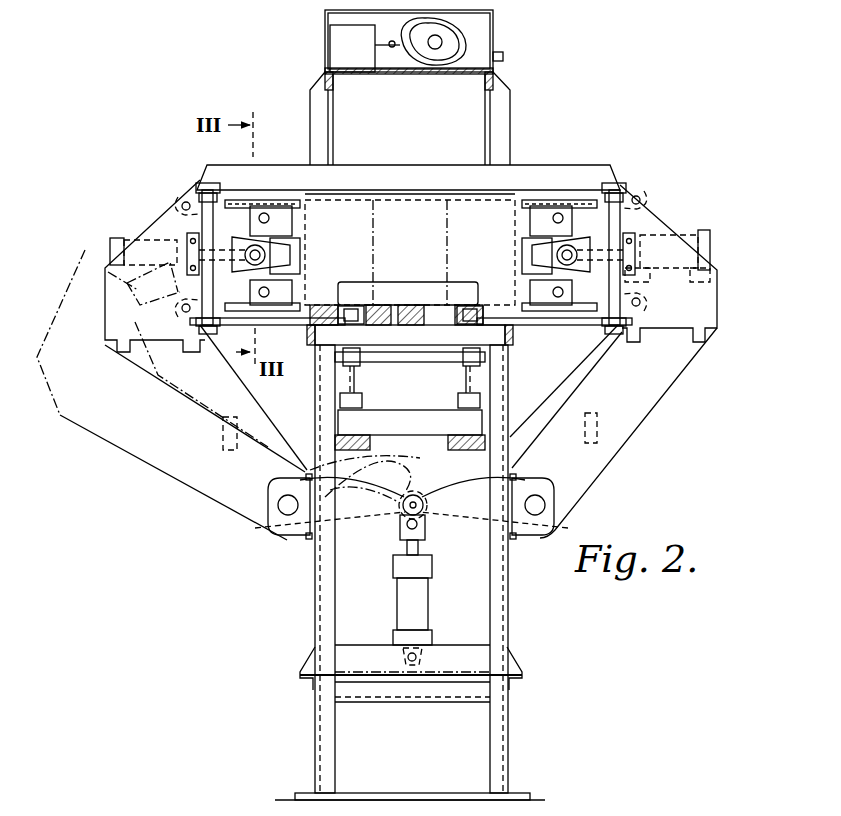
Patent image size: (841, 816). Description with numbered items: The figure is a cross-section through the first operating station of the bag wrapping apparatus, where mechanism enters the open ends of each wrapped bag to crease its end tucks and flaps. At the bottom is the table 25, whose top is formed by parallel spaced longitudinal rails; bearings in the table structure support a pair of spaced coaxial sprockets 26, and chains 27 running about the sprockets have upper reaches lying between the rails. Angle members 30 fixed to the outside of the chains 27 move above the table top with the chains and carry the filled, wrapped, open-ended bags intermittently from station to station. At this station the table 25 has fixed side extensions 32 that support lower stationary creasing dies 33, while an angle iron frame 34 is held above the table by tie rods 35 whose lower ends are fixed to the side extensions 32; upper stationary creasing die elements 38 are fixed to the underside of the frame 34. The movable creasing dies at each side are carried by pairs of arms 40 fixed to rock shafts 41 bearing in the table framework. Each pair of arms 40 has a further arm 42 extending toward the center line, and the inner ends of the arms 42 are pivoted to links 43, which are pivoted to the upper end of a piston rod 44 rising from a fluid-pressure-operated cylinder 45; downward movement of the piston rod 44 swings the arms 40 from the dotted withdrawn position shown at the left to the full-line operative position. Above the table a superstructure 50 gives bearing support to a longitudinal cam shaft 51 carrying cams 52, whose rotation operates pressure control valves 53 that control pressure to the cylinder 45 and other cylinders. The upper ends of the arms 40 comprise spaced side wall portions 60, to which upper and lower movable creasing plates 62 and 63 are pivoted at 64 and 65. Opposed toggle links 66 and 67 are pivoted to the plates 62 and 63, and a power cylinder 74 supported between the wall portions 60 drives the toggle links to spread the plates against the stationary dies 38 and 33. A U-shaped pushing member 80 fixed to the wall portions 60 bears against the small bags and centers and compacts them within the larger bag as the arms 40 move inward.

The table 25 is at (512, 624).
The sprockets 26 is at (358, 360).
The chains 27 is at (340, 400).
The angle members 30 is at (407, 292).
The side extensions 32 is at (290, 322).
The lower stationary creasing dies 33 is at (250, 312).
The angle iron frame 34 is at (418, 170).
The tie rods 35 is at (207, 188).
The upper stationary creasing die elements 38 is at (295, 200).
The arms 40 is at (185, 430).
The rock shafts 41 is at (285, 507).
The arm 42 is at (352, 528).
The links 43 is at (427, 509).
The piston rod 44 is at (405, 548).
The fluid-pressure-operated cylinder 45 is at (428, 597).
The superstructure 50 is at (500, 40).
The cam shaft 51 is at (441, 40).
The cams 52 is at (428, 73).
The pressure control valves 53 is at (363, 76).
The side wall portions 60 is at (250, 245).
The upper movable creasing plate 62 is at (255, 200).
The lower movable creasing plate 63 is at (300, 302).
The pivot 64 is at (184, 203).
The pivot 65 is at (186, 313).
The toggle link 66 is at (560, 200).
The toggle link 67 is at (574, 322).
The power cylinder 74 is at (118, 238).
The pushing member 80 is at (300, 240).